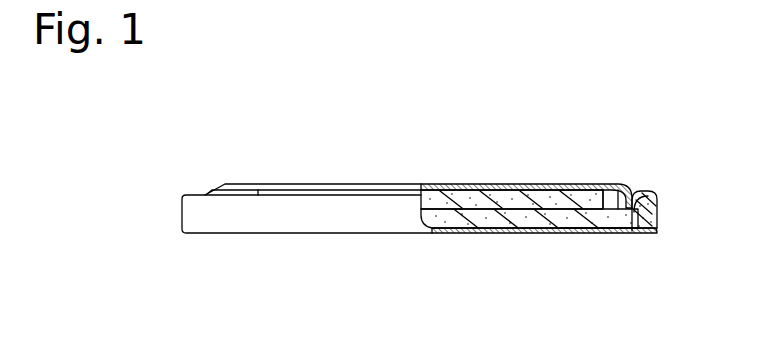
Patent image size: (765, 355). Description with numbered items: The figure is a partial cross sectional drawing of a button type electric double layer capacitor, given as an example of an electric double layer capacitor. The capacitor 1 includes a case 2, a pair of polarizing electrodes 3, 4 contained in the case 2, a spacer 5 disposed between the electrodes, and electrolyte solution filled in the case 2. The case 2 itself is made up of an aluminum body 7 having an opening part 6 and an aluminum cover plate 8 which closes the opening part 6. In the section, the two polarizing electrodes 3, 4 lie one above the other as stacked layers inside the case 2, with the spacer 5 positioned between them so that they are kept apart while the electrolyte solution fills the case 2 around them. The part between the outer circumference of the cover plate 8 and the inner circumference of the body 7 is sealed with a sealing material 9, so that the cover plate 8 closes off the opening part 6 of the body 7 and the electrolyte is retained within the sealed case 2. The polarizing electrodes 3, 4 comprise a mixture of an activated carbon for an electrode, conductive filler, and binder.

The capacitor 1 is at (431, 171).
The case 2 is at (553, 183).
The polarizing electrode 3 is at (520, 185).
The polarizing electrode 4 is at (524, 233).
The spacer 5 is at (476, 233).
The opening part 6 is at (635, 188).
The aluminum body 7 is at (575, 233).
The aluminum cover plate 8 is at (468, 185).
The sealing material 9 is at (643, 233).